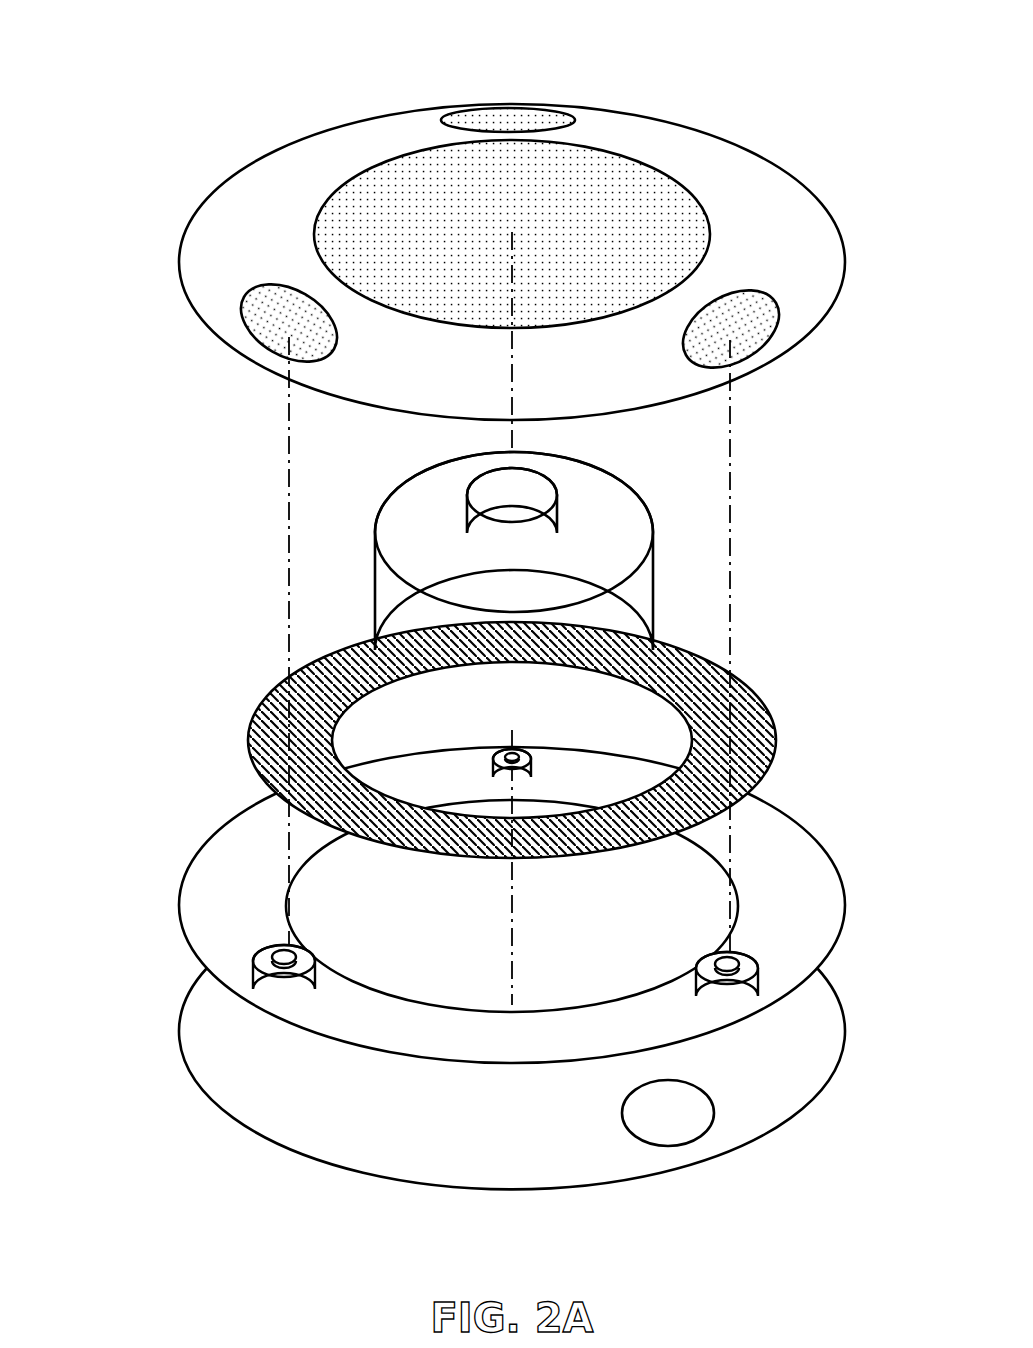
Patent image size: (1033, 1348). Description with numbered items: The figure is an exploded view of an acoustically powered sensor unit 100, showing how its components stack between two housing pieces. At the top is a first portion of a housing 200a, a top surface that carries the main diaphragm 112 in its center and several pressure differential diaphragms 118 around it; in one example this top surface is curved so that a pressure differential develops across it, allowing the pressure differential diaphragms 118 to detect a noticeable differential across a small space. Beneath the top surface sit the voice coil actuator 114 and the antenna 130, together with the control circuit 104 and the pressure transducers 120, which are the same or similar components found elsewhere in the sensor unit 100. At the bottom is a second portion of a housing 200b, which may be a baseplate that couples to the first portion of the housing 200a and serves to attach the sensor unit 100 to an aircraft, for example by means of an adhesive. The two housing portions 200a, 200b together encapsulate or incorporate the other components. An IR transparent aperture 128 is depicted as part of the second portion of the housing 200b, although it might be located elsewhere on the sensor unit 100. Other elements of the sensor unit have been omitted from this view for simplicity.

The sensor unit 100 is at (178, 38).
The control circuit 104 is at (512, 905).
The main diaphragm 112 is at (578, 212).
The voice coil actuator 114 is at (395, 533).
The pressure differential diaphragms 118 is at (508, 107).
The pressure transducers 120 is at (533, 762).
The IR transparent aperture 128 is at (675, 1122).
The antenna 130 is at (250, 730).
The first portion of a housing 200a is at (512, 262).
The second portion of a housing 200b is at (512, 1078).